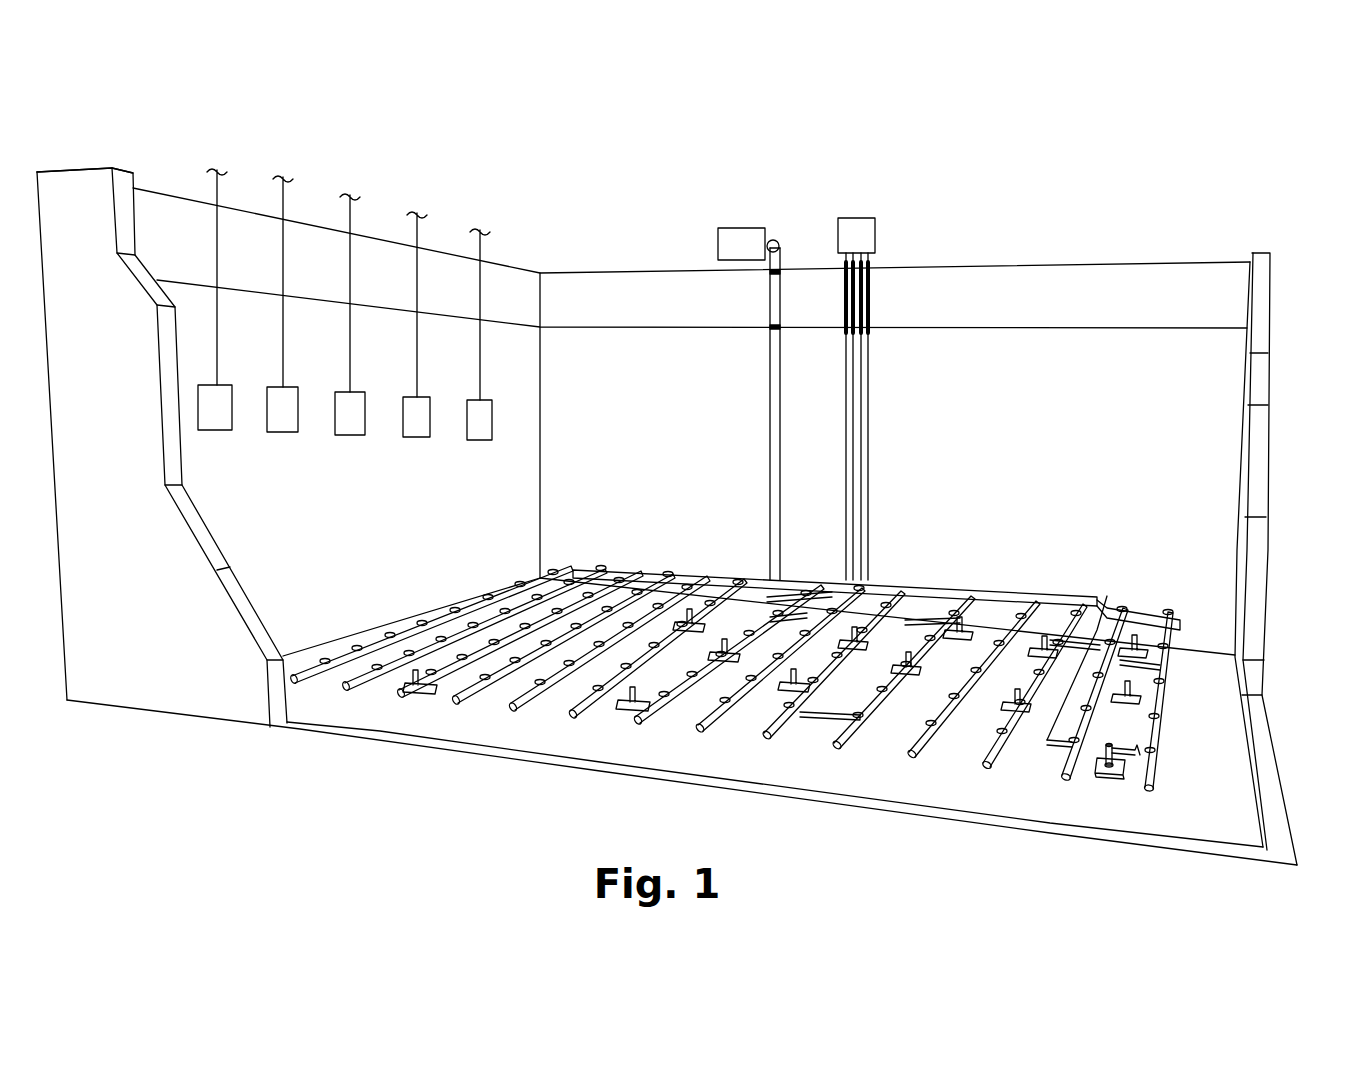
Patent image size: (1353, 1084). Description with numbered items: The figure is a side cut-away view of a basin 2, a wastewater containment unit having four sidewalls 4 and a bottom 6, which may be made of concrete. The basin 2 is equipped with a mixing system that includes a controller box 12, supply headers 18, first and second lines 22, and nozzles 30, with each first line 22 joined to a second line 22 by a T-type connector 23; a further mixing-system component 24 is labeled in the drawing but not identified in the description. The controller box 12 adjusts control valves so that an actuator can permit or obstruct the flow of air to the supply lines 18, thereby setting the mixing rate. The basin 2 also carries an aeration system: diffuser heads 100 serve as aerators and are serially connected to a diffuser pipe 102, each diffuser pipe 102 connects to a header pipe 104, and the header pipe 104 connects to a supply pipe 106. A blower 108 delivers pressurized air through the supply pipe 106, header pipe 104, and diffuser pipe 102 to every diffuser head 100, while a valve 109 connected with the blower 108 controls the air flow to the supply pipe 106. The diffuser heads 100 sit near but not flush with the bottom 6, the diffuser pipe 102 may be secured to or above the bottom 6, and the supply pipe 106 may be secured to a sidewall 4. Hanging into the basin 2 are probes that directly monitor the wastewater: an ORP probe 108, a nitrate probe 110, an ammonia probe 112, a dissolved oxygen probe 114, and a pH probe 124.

The basin 2 is at (160, 163).
The sidewall 4 is at (1178, 432).
The bottom 6 is at (568, 750).
The controller box 12 is at (862, 222).
The supply header 18 is at (858, 383).
The first line 22 is at (1057, 760).
The T-type connector 23 is at (1118, 742).
The sprinkler head 24 is at (1118, 755).
The nozzle 30 is at (1120, 775).
The diffuser head 100 is at (775, 715).
The diffuser pipe 102 is at (806, 716).
The header pipe 104 is at (731, 644).
The supply pipe 106 is at (770, 380).
The blower 108 is at (275, 432).
The valve 109 is at (775, 240).
The nitrate probe 110 is at (350, 435).
The ammonia probe 112 is at (420, 437).
The dissolved oxygen probe 114 is at (480, 440).
The pH probe 124 is at (205, 432).